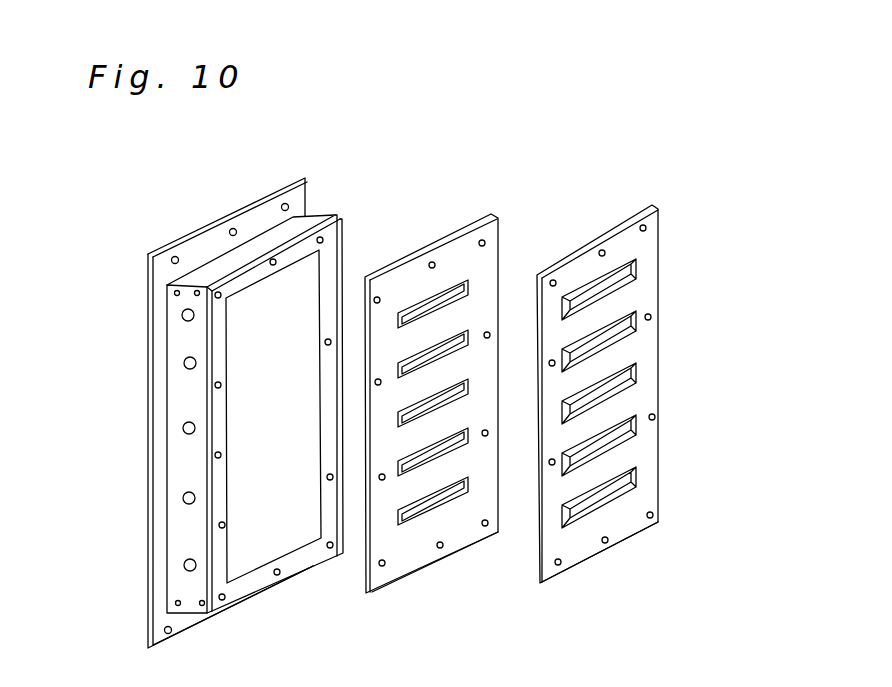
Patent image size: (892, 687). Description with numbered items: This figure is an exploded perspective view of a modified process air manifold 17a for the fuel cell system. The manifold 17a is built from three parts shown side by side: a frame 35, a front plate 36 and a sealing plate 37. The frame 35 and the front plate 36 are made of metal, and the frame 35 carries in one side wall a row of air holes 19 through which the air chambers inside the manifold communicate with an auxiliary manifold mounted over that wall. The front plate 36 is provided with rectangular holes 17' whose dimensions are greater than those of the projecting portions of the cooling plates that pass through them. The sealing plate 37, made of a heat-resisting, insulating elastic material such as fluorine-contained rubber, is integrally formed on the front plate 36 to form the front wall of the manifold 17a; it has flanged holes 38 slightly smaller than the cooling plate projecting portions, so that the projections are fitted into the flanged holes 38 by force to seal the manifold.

The process air manifold 17a is at (627, 143).
The frame 35 is at (303, 222).
The front plate 36 is at (445, 248).
The sealing plate 37 is at (580, 246).
The flanged holes 38 is at (620, 332).
The rectangular holes 17' is at (476, 434).
The air holes 19 is at (183, 315).